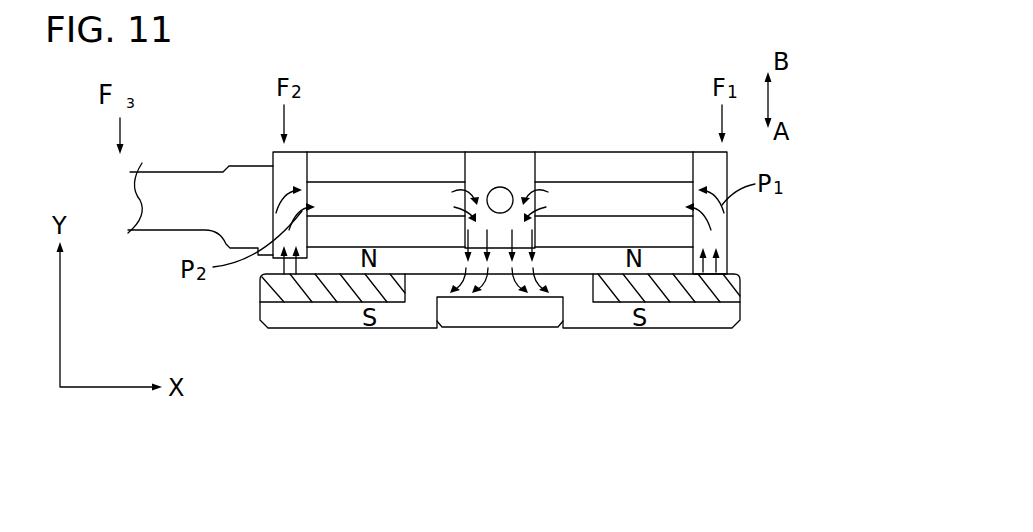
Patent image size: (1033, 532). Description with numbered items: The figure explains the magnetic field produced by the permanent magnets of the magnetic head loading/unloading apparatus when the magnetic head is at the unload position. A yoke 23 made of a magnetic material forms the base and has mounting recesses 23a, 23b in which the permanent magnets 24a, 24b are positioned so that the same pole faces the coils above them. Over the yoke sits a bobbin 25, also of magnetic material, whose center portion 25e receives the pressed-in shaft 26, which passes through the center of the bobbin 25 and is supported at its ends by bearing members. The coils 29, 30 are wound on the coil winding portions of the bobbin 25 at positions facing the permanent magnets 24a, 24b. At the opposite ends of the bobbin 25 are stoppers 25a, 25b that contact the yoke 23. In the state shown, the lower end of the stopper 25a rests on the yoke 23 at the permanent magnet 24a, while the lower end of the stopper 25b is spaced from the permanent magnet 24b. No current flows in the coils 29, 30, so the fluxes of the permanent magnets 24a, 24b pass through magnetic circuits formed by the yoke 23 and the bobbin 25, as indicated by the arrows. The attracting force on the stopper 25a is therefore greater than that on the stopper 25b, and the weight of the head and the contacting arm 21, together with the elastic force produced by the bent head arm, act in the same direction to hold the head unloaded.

The contacting arm 21 is at (199, 180).
The yoke 23 is at (500, 329).
The mounting recess 23a is at (723, 307).
The mounting recess 23b is at (298, 295).
The permanent magnet 24a is at (672, 293).
The permanent magnet 24b is at (337, 292).
The bobbin 25 is at (500, 161).
The stopper 25a is at (712, 152).
The stopper 25b is at (297, 152).
The center portion 25e is at (518, 153).
The shaft 26 is at (500, 187).
The coil 29 is at (401, 158).
The coil 30 is at (605, 158).